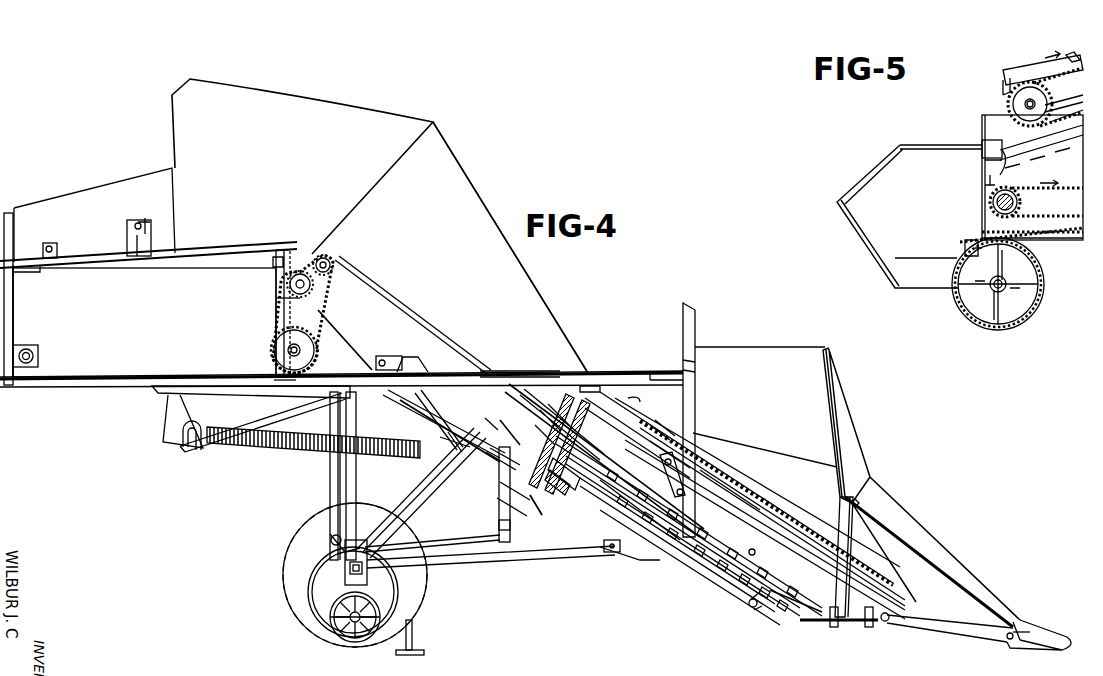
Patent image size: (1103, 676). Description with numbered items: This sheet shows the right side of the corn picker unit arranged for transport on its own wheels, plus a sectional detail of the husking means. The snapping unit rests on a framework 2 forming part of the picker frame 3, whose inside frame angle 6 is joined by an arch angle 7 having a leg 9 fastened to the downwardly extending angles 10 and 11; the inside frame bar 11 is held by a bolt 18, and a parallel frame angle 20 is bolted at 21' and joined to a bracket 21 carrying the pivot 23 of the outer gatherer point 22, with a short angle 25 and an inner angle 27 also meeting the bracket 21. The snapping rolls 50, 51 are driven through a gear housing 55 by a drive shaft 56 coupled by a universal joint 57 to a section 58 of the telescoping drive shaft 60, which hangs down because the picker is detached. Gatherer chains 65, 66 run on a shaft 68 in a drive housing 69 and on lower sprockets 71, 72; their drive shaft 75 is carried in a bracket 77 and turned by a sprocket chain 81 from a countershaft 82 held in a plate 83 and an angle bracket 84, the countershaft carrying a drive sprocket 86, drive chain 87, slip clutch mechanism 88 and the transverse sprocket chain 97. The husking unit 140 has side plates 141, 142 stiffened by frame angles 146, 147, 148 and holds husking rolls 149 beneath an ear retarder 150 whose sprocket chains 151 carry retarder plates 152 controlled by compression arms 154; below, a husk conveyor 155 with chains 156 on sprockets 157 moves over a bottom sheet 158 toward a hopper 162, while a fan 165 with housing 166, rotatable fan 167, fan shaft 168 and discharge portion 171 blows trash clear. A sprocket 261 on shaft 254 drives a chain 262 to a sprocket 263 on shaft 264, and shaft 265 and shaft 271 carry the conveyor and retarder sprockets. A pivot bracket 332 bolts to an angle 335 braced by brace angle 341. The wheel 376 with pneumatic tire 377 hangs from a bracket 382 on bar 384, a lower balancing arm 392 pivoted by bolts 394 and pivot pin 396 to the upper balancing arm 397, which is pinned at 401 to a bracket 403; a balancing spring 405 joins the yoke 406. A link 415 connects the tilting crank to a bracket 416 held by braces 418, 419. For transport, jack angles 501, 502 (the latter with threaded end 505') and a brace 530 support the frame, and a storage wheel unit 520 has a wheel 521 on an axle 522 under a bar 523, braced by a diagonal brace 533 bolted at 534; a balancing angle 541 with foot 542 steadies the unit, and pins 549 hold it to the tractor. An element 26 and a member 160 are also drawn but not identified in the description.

In FIG. 4, the framework 2 is at (659, 574).
In FIG. 4, the corn picker frame 3 is at (451, 362).
In FIG. 4, the inside frame angle 6 is at (472, 371).
In FIG. 4, the arch angle 7 is at (698, 330).
In FIG. 4, the inner leg of arch angle 9 is at (690, 390).
In FIG. 4, the outer picker frame bar 10 is at (477, 478).
In FIG. 4, the inside frame bar 11 is at (700, 563).
In FIG. 4, the bolt 18 is at (505, 378).
In FIG. 4, the frame angle 20 is at (801, 536).
In FIG. 4, the bracket 21 is at (861, 577).
In FIG. 4, the bolted connection 21' is at (598, 371).
In FIG. 4, the outer gatherer point 22 is at (955, 626).
In FIG. 4, the pivot 23 is at (886, 622).
In FIG. 4, the short angle 25 is at (848, 624).
In FIG. 4, the frame bar 26 is at (610, 388).
In FIG. 4, the inner angle 27 is at (856, 585).
In FIG. 4, the snapping roll 50 is at (728, 586).
In FIG. 4, the snapping roll 51 is at (708, 581).
In FIG. 4, the gear housing 55 is at (552, 406).
In FIG. 4, the drive shaft 56 is at (537, 404).
In FIG. 4, the universal joint 57 is at (501, 412).
In FIG. 4, the drive shaft section 58 is at (501, 530).
In FIG. 4, the telescoping drive shaft 60 is at (510, 526).
In FIG. 4, the gatherer chain 65 is at (707, 448).
In FIG. 4, the gatherer chain 66 is at (622, 505).
In FIG. 4, the shaft 68 is at (662, 427).
In FIG. 4, the gatherer chain drive housing 69 is at (664, 462).
In FIG. 4, the sprocket 71 is at (900, 582).
In FIG. 4, the sprocket 72 is at (812, 595).
In FIG. 4, the gatherer chain drive shaft 75 is at (634, 437).
In FIG. 4, the bracket 77 is at (632, 402).
In FIG. 4, the sprocket chain 81 is at (578, 405).
In FIG. 4, the countershaft 82 is at (503, 450).
In FIG. 4, the plate 83 is at (500, 502).
In FIG. 4, the angle bracket 84 is at (492, 421).
In FIG. 4, the drive sprocket 86 is at (538, 506).
In FIG. 4, the drive chain 87 is at (570, 481).
In FIG. 4, the slip clutch mechanism 88 is at (562, 480).
In FIG. 4, the transverse sprocket chain 97 is at (503, 487).
In FIG. 4, the husking unit 140 is at (84, 168).
In FIG. 5, the husking unit 140 is at (1070, 48).
In FIG. 5, the side plate 141 is at (988, 122).
In FIG. 4, the side plate 142 is at (215, 308).
In FIG. 4, the reinforcing frame angle 146 is at (278, 322).
In FIG. 4, the reinforcing frame angle 147 is at (170, 262).
In FIG. 4, the reinforcing frame angle 148 is at (8, 320).
In FIG. 5, the husking rolls 149 is at (983, 142).
In FIG. 5, the ear retarder 150 is at (1023, 69).
In FIG. 5, the sprocket chains 151 is at (1034, 76).
In FIG. 5, the retarder plates 152 is at (1004, 82).
In FIG. 5, the ear retarder compression arms 154 is at (1060, 106).
In FIG. 5, the husk conveyor 155 is at (984, 205).
In FIG. 5, the conveyor chains 156 is at (1045, 237).
In FIG. 5, the sprockets 157 is at (1030, 208).
In FIG. 5, the bottom sheet 158 is at (1030, 240).
In FIG. 4, the brace 160 is at (338, 337).
In FIG. 5, the hopper 162 is at (848, 192).
In FIG. 5, the fan 165 is at (1047, 304).
In FIG. 5, the fan housing 166 is at (968, 313).
In FIG. 5, the rotatable fan 167 is at (1036, 282).
In FIG. 5, the fan shaft 168 is at (993, 325).
In FIG. 5, the discharge portion 171 is at (967, 246).
In FIG. 4, the shaft 254 is at (289, 285).
In FIG. 4, the sprocket 261 is at (278, 308).
In FIG. 4, the chain 262 is at (335, 266).
In FIG. 4, the sprocket 263 is at (274, 350).
In FIG. 4, the shaft 264 is at (305, 352).
In FIG. 4, the shaft 265 is at (40, 355).
In FIG. 4, the shaft 271 is at (54, 246).
In FIG. 5, the shaft 271 is at (1025, 104).
In FIG. 4, the pivot bracket 332 is at (184, 404).
In FIG. 4, the angle 335 is at (320, 398).
In FIG. 4, the brace angle 341 is at (265, 420).
In FIG. 4, the wheel 376 is at (273, 589).
In FIG. 4, the pneumatic tire 377 is at (307, 618).
In FIG. 4, the bracket 382 is at (408, 527).
In FIG. 4, the forwardly extending bar 384 is at (462, 550).
In FIG. 4, the lower balancing arm 392 is at (430, 480).
In FIG. 4, the bolts 394 is at (422, 550).
In FIG. 4, the pivot pin 396 is at (455, 440).
In FIG. 4, the upper balancing arm 397 is at (440, 420).
In FIG. 4, the pivot pin 401 is at (381, 356).
In FIG. 4, the bracket 403 is at (400, 370).
In FIG. 4, the balancing spring 405 is at (306, 442).
In FIG. 4, the yoke 406 is at (378, 398).
In FIG. 4, the link 415 is at (665, 470).
In FIG. 4, the bracket 416 is at (690, 478).
In FIG. 4, the brace 418 is at (644, 568).
In FIG. 4, the brace 419 is at (750, 548).
In FIG. 4, the transport jack angle 501 is at (330, 465).
In FIG. 4, the jack angle 502 is at (354, 480).
In FIG. 4, the lower threaded end 505' is at (323, 538).
In FIG. 4, the storage wheel unit 520 is at (300, 604).
In FIG. 4, the wheel 521 is at (345, 636).
In FIG. 4, the axle 522 is at (382, 613).
In FIG. 4, the bar 523 is at (334, 589).
In FIG. 4, the brace 530 is at (340, 498).
In FIG. 4, the diagonal brace 533 is at (506, 558).
In FIG. 4, the bolted connection 534 is at (614, 552).
In FIG. 4, the balancing angle 541 is at (412, 628).
In FIG. 4, the foot 542 is at (420, 652).
In FIG. 4, the pins 549 is at (182, 442).